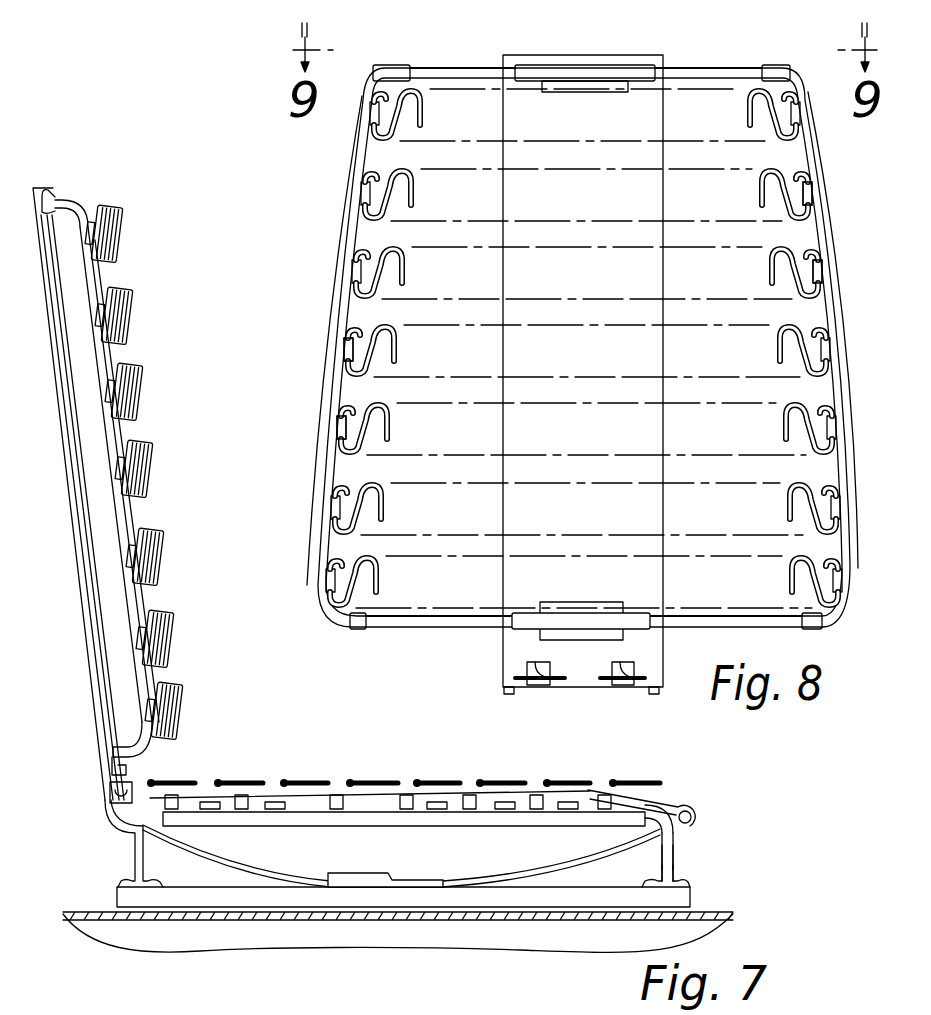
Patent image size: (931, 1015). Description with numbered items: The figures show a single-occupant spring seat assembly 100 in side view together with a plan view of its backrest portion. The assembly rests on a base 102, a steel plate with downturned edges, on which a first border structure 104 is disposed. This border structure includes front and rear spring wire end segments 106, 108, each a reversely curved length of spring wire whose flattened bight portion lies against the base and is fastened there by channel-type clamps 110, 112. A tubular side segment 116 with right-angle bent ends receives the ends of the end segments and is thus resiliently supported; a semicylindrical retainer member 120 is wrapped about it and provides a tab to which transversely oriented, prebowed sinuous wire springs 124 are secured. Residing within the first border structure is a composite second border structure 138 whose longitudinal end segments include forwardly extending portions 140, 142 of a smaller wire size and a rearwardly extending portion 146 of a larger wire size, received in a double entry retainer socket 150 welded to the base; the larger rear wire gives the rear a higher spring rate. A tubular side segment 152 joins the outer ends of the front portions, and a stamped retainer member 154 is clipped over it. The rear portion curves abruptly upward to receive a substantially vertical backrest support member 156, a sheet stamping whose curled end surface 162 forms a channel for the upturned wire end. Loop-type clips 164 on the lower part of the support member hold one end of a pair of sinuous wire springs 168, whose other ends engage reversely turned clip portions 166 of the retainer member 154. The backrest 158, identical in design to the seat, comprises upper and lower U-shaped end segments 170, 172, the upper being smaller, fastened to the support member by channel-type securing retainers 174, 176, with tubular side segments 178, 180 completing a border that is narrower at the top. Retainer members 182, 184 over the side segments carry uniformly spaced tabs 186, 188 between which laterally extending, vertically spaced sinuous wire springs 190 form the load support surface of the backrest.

In FIG. 7, the spring seat assembly 100 is at (416, 814).
In FIG. 7, the base 102 is at (680, 895).
In FIG. 7, the first border structure 104 is at (680, 850).
In FIG. 7, the front spring wire end segment 106 is at (670, 870).
In FIG. 7, the rear spring wire end segment 108 is at (133, 848).
In FIG. 7, the channel-type clamp 110 is at (648, 880).
In FIG. 7, the channel-type clamp 112 is at (120, 882).
In FIG. 7, the tubular side segment 116 is at (670, 836).
In FIG. 7, the retainer member 120 is at (435, 820).
In FIG. 7, the sinuous wire springs 124 is at (330, 782).
In FIG. 7, the second border structure 138 is at (240, 864).
In FIG. 8, the forwardly extending end segment portion 140 is at (652, 694).
In FIG. 8, the forwardly extending end segment portion 142 is at (503, 690).
In FIG. 7, the forwardly extending end segment portion 142 is at (502, 875).
In FIG. 7, the rearwardly extending end segment portion 146 is at (210, 865).
In FIG. 7, the double entry retainer socket 150 is at (352, 878).
In FIG. 7, the side segment 152 is at (690, 815).
In FIG. 7, the retainer member 154 is at (672, 818).
In FIG. 8, the backrest support member 156 is at (663, 355).
In FIG. 7, the backrest support member 156 is at (100, 744).
In FIG. 8, the backrest 158 is at (340, 199).
In FIG. 7, the backrest 158 is at (140, 281).
In FIG. 7, the curled transverse end surface 162 is at (340, 1010).
In FIG. 8, the loop-type clips 164 is at (610, 686).
In FIG. 7, the loop-type clips 164 is at (120, 797).
In FIG. 7, the reversely turned clip portions 166 is at (680, 803).
In FIG. 7, the sinuous wire springs 168 is at (603, 797).
In FIG. 8, the upper U-shaped end segment 170 is at (460, 67).
In FIG. 7, the upper U-shaped end segment 170 is at (55, 196).
In FIG. 8, the lower U-shaped end segment 172 is at (430, 628).
In FIG. 7, the lower U-shaped end segment 172 is at (108, 748).
In FIG. 8, the channel-type securing retainer 174 is at (608, 73).
In FIG. 8, the channel-type securing retainer 176 is at (580, 614).
In FIG. 8, the side segment 178 is at (783, 67).
In FIG. 8, the side segment 180 is at (391, 66).
In FIG. 7, the side segment 180 is at (78, 200).
In FIG. 8, the retainer member 182 is at (818, 163).
In FIG. 8, the retainer member 184 is at (343, 236).
In FIG. 7, the retainer member 184 is at (103, 333).
In FIG. 8, the tabs 186 is at (822, 267).
In FIG. 8, the tabs 188 is at (330, 423).
In FIG. 8, the sinuous wire springs 190 is at (398, 260).
In FIG. 7, the sinuous wire springs 190 is at (143, 422).